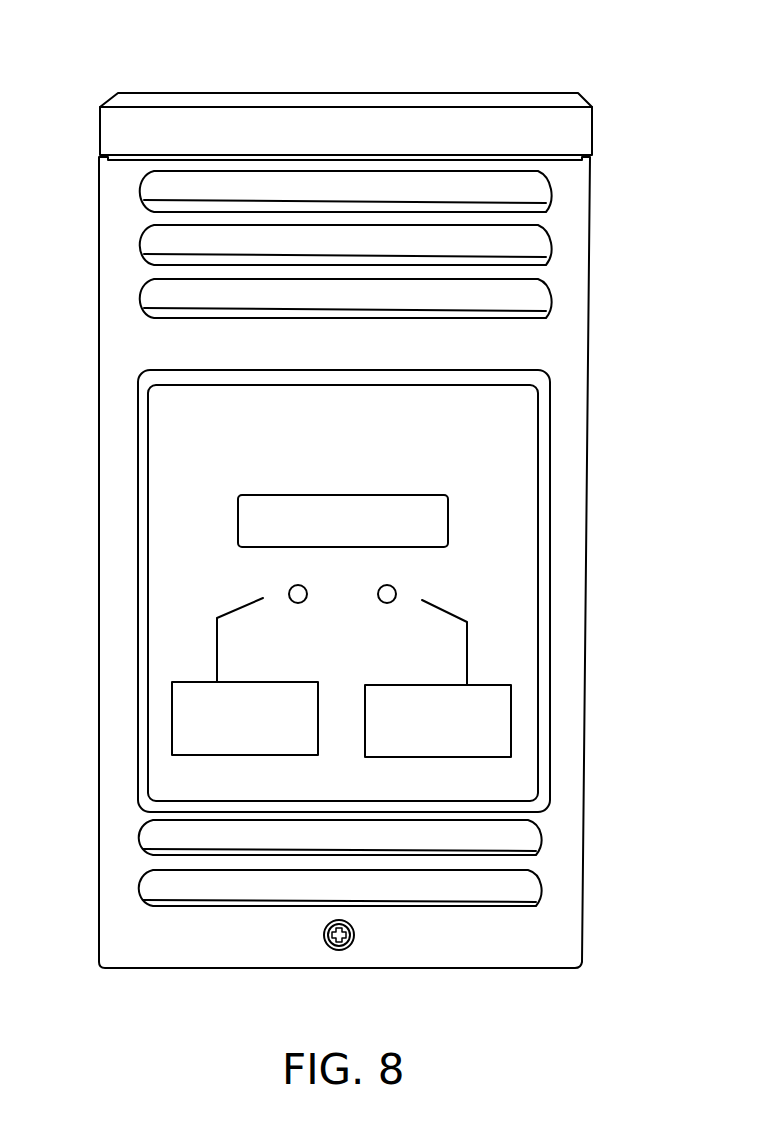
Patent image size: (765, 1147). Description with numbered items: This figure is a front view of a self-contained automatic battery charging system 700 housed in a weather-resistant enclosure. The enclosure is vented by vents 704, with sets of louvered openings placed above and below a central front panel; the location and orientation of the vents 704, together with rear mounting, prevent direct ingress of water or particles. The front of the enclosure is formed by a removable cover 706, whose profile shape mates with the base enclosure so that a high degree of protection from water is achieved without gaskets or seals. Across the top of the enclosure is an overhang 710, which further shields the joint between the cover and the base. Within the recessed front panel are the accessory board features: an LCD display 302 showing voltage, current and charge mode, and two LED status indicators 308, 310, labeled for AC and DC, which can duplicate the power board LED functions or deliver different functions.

The self-contained automatic battery charging system 700 is at (346, 536).
The vents 704 is at (146, 318).
The removable cover 706 is at (107, 447).
The overhang 710 is at (142, 127).
The LCD display 302 is at (238, 540).
The LED status indicator 308 is at (289, 591).
The LED status indicator 310 is at (396, 590).